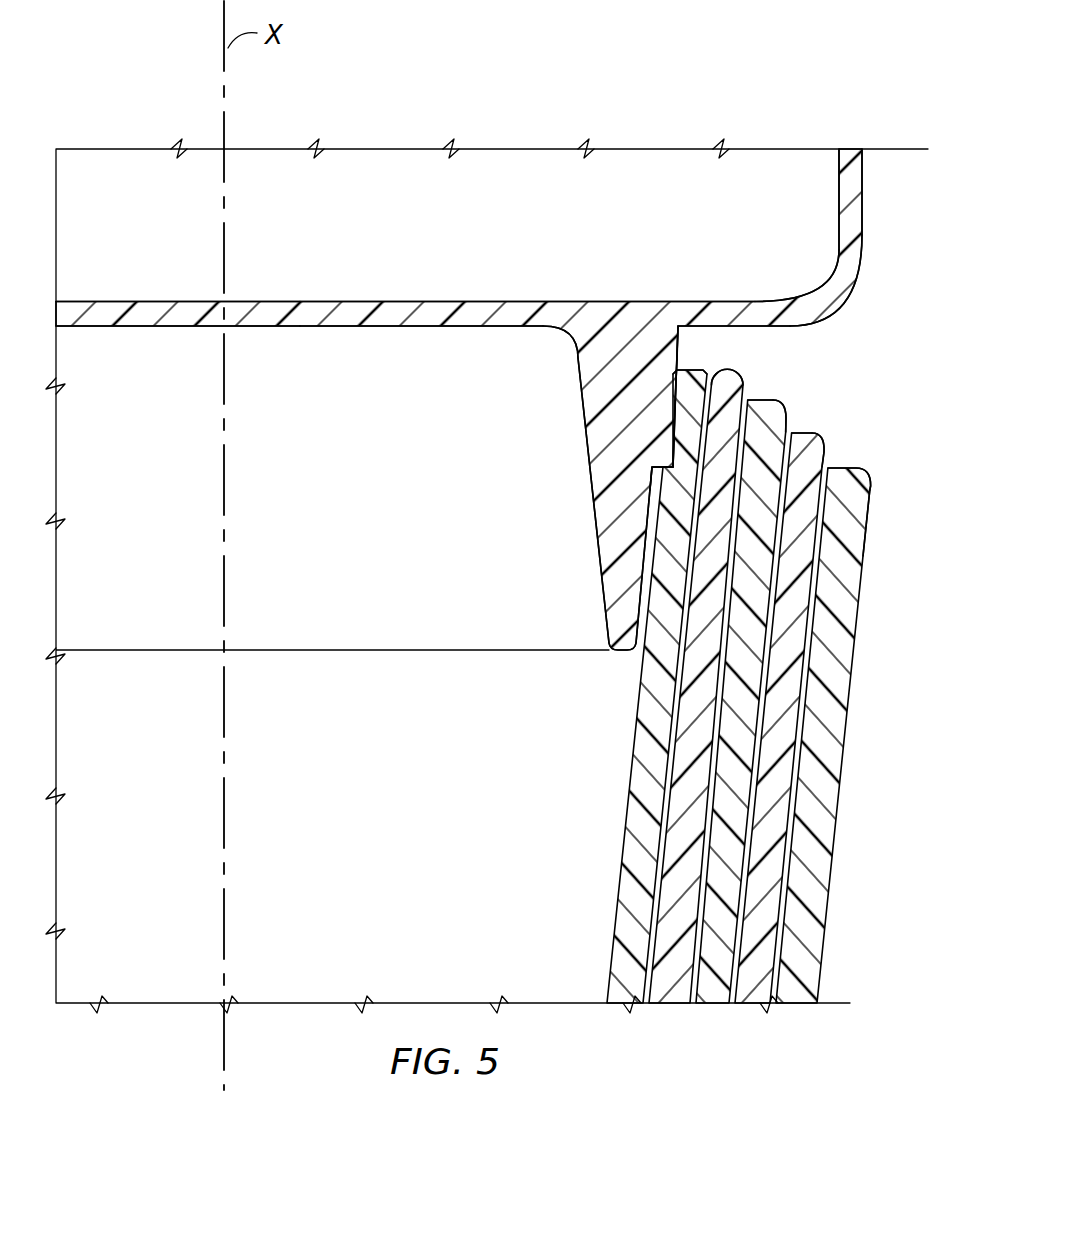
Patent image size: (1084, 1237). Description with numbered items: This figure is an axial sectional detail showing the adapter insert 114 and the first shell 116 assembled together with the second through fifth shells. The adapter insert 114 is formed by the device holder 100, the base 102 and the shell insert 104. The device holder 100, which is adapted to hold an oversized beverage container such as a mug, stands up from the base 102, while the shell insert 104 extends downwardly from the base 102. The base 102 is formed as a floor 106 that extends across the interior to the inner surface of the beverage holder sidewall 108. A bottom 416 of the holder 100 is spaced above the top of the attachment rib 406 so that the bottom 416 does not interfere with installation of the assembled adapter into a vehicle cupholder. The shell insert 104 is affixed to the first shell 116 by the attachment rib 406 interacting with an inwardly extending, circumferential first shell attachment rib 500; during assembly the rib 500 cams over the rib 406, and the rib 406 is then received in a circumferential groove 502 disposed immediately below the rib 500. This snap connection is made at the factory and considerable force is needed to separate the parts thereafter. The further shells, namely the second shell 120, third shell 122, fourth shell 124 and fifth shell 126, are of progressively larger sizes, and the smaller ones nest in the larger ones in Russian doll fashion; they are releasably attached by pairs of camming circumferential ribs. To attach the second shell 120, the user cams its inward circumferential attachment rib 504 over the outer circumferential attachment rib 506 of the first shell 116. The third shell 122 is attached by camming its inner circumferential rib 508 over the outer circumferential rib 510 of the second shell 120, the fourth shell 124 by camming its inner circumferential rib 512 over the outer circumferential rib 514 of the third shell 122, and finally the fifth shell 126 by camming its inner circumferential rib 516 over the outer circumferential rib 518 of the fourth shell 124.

The device holder 100 is at (880, 173).
The base 102 is at (157, 313).
The shell insert 104 is at (582, 404).
The floor 106 is at (405, 298).
The beverage holder sidewall 108 is at (862, 218).
The adapter insert 114 is at (886, 295).
The first shell 116 is at (628, 878).
The second shell 120 is at (680, 815).
The third shell 122 is at (730, 772).
The fourth shell 124 is at (773, 828).
The fifth shell 126 is at (820, 858).
The attachment rib 406 is at (677, 413).
The bottom of the holder 416 is at (684, 341).
The first shell attachment rib 500 is at (670, 390).
The groove 502 is at (673, 457).
The inward circumferential attachment rib 504 is at (700, 377).
The outer circumferential attachment rib 506 is at (737, 377).
The inner circumferential rib 508 is at (760, 406).
The outer circumferential rib 510 is at (780, 418).
The inner circumferential rib 512 is at (817, 438).
The outer circumferential rib 514 is at (827, 463).
The inner circumferential rib 516 is at (866, 493).
The outer circumferential rib 518 is at (856, 555).